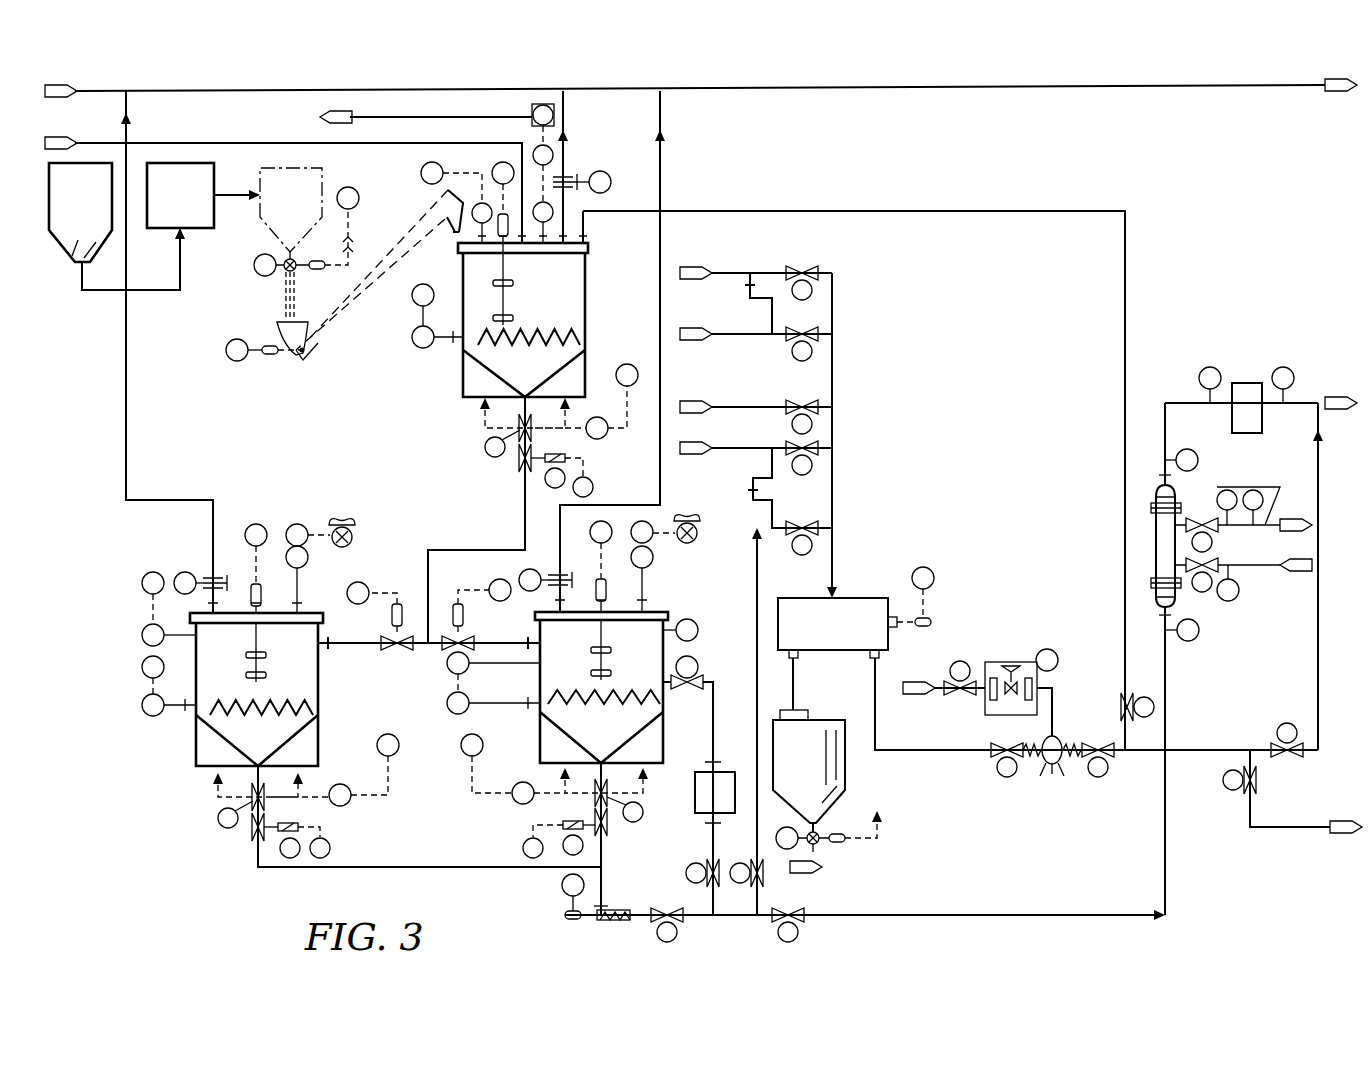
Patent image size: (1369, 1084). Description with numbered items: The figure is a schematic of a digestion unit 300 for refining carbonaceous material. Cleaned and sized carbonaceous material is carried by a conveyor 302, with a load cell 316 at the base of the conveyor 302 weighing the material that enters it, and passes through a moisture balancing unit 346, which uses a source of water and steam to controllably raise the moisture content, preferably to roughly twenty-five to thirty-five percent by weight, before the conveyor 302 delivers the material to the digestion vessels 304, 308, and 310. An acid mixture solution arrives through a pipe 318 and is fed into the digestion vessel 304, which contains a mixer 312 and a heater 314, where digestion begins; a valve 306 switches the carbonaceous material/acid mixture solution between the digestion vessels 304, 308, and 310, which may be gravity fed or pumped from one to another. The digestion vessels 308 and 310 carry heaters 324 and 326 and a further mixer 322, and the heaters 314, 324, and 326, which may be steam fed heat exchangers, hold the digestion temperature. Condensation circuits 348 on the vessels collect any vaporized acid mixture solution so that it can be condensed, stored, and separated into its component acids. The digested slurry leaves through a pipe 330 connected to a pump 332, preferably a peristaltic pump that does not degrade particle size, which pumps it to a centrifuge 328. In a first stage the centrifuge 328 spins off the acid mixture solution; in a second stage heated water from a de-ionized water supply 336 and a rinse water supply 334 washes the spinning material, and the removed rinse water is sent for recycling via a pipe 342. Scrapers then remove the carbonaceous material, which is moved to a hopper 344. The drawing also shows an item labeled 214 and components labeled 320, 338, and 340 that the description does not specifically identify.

The feedstock supply bin 214 is at (80, 212).
The digestion unit 300 is at (165, 880).
The conveyor 302 is at (360, 304).
The digestion vessel 304 is at (533, 279).
The valve 306 is at (428, 650).
The digestion vessel 308 is at (263, 642).
The digestion vessel 310 is at (573, 639).
The mixer 312 is at (513, 284).
The heater 314 is at (582, 333).
The load cell 316 is at (277, 332).
The pipe 318 is at (266, 143).
The agitator of second reactor 320 is at (290, 653).
The mixer 322 is at (590, 660).
The heater 324 is at (226, 702).
The heater 326 is at (640, 692).
The centrifuge 328 is at (856, 612).
The pipe 330 is at (604, 848).
The pump 332 is at (620, 908).
The rinse water supply 334 is at (728, 450).
The de-ionized water supply 336 is at (735, 273).
The second feed line 338 is at (725, 336).
The third feed line 340 is at (758, 407).
The pipe 342 is at (948, 752).
The hopper 344 is at (856, 768).
The moisture balancing unit 346 is at (180, 195).
The condensation circuits 348 is at (931, 87).